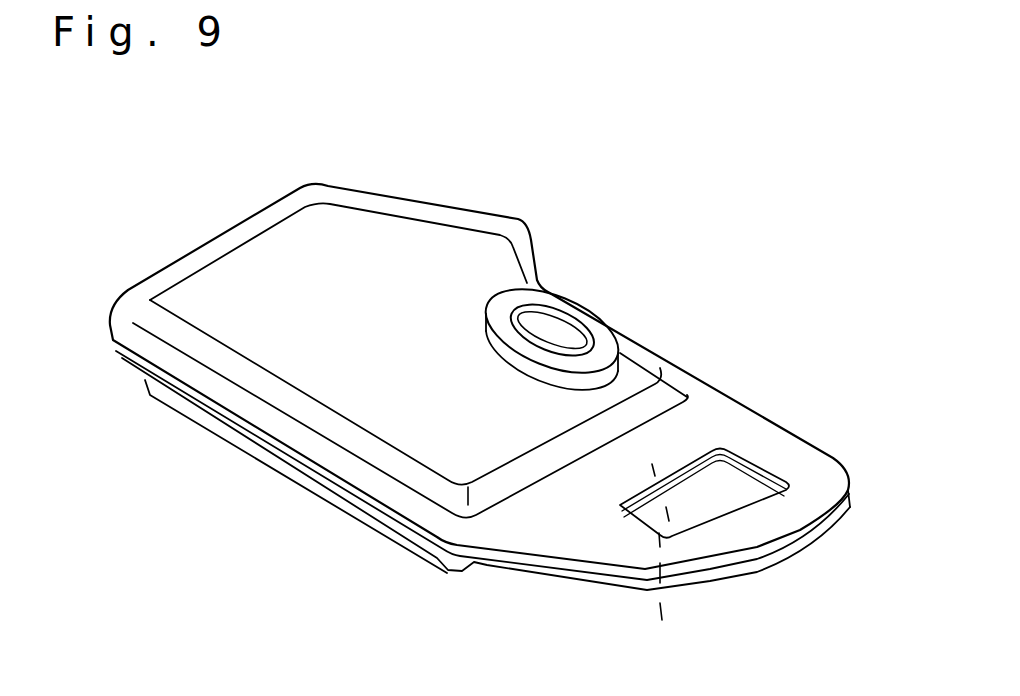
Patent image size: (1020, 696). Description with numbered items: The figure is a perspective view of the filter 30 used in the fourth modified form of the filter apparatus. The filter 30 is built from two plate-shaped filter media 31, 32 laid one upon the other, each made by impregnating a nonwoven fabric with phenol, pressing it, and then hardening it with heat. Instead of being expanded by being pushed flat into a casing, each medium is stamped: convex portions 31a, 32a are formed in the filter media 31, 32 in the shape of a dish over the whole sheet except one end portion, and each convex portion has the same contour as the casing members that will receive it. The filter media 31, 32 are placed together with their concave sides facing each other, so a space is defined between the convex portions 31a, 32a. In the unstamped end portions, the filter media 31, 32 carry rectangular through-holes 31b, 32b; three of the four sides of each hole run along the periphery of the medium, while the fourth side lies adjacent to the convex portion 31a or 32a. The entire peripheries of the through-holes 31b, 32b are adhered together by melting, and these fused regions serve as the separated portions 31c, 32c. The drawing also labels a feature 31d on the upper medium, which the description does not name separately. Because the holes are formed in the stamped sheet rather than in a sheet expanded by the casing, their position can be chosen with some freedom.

The filter 30 is at (727, 585).
The filter medium 31 is at (435, 250).
The convex portion 31a is at (300, 367).
The through-hole 31b is at (732, 466).
The separated portion 31c is at (713, 410).
The boss 31d is at (543, 327).
The filter medium 32 is at (413, 547).
The convex portion 32a is at (300, 486).
The through-hole 32b is at (760, 490).
The separated portion 32c is at (580, 565).